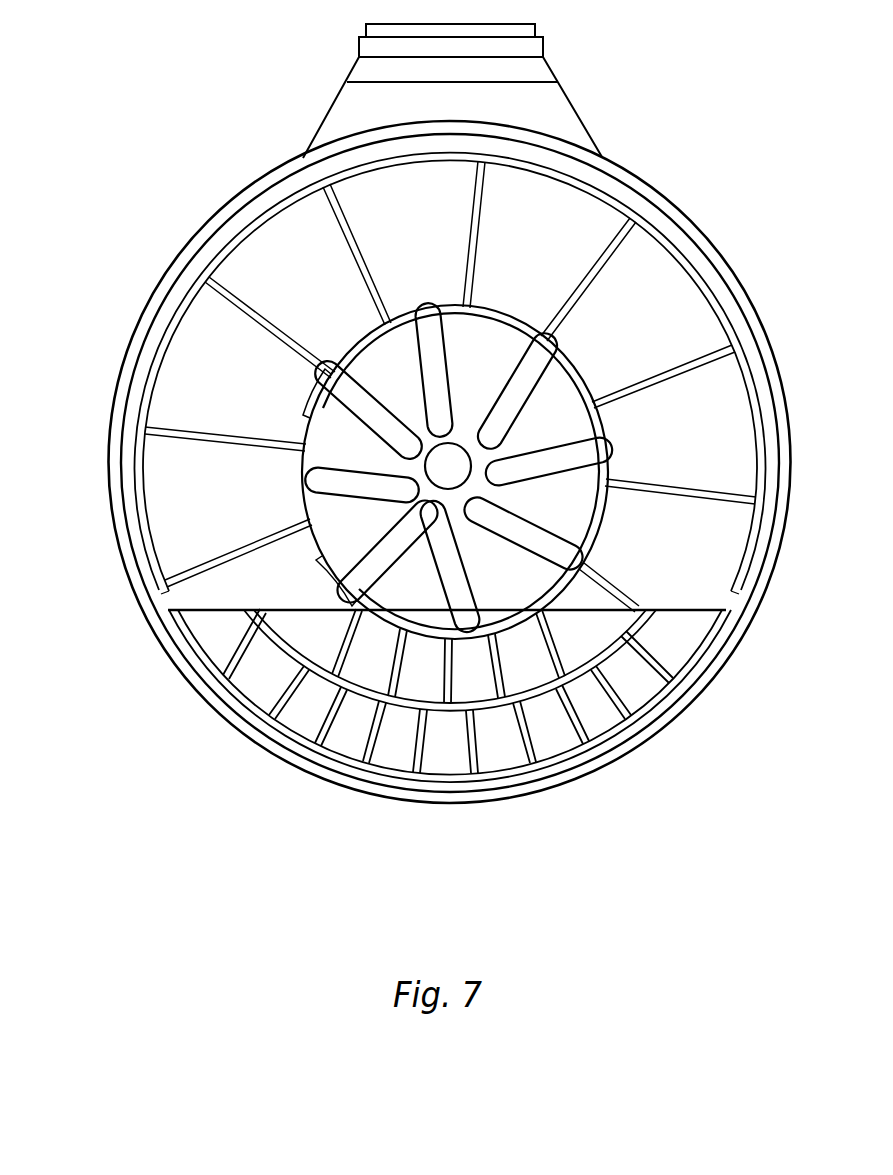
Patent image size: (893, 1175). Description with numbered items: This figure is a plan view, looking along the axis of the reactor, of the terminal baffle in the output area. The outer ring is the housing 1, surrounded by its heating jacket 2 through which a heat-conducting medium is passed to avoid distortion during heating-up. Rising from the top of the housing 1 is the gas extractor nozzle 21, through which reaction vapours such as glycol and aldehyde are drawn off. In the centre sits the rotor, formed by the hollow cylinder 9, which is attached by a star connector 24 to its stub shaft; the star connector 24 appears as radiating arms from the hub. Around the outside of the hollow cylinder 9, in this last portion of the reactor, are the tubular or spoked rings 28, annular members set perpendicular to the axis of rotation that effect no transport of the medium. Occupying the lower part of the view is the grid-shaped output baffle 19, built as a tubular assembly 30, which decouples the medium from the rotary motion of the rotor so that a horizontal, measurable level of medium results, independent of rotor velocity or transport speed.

The housing 1 is at (780, 445).
The heating jacket 2 is at (786, 513).
The hollow cylinder 9 is at (456, 471).
The grid-shaped output baffle 19 is at (452, 691).
The gas extractor nozzle 21 is at (553, 108).
The star connector 24 is at (578, 445).
The tubular and/or spoked rings 28 is at (688, 268).
The tubular assembly 30 is at (240, 665).